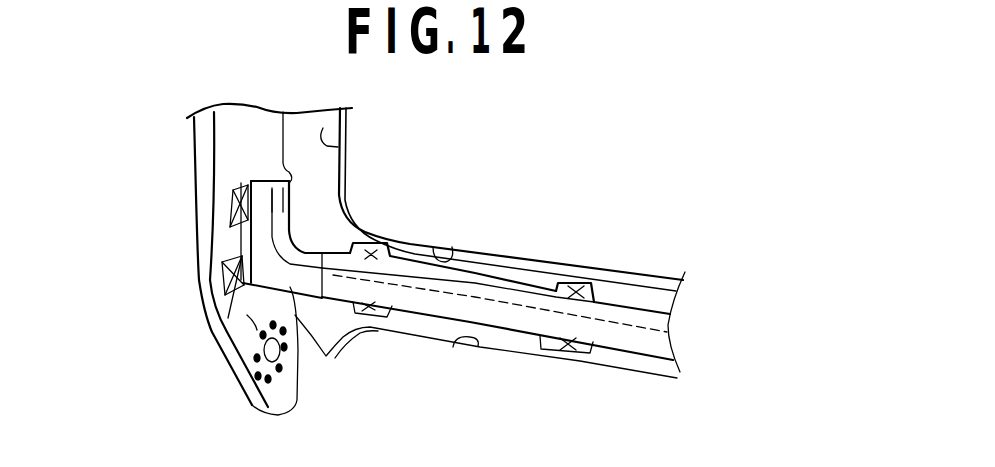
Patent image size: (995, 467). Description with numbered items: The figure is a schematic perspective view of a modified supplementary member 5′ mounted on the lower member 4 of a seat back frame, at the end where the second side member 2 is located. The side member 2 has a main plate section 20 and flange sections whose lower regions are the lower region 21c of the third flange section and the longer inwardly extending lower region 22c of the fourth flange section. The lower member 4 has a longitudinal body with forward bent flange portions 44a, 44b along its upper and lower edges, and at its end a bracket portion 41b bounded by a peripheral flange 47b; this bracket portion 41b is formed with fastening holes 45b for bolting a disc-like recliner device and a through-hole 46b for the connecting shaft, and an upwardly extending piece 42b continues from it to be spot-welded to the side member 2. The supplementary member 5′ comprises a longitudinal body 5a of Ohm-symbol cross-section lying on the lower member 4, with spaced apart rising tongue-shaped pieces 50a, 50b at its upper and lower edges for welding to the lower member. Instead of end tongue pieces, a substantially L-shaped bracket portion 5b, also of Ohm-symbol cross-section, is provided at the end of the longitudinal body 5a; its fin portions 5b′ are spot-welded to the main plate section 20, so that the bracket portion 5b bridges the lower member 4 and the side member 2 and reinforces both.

The second side member 2 is at (193, 133).
The main plate section 20 is at (250, 130).
The lower region of the fourth flange section 22c is at (343, 143).
The fin portions 5b′ is at (263, 166).
The upwardly extending piece 42b is at (313, 205).
The lower region of the third flange section 21c is at (200, 200).
The bracket portion 5b is at (245, 250).
The lower member 4 is at (502, 258).
The forward bent flange portion 44a is at (436, 246).
The rising tongue-shaped pieces 50a is at (557, 283).
The fastening holes 45b is at (280, 330).
The forward bent flange portion 44b is at (463, 346).
The rising tongue-shaped pieces 50b is at (568, 345).
The longitudinal body 5a is at (527, 330).
The supplementary member 5′ is at (654, 344).
The flange 47b is at (243, 365).
The bracket portion 41b is at (247, 315).
The through-hole 46b is at (278, 352).